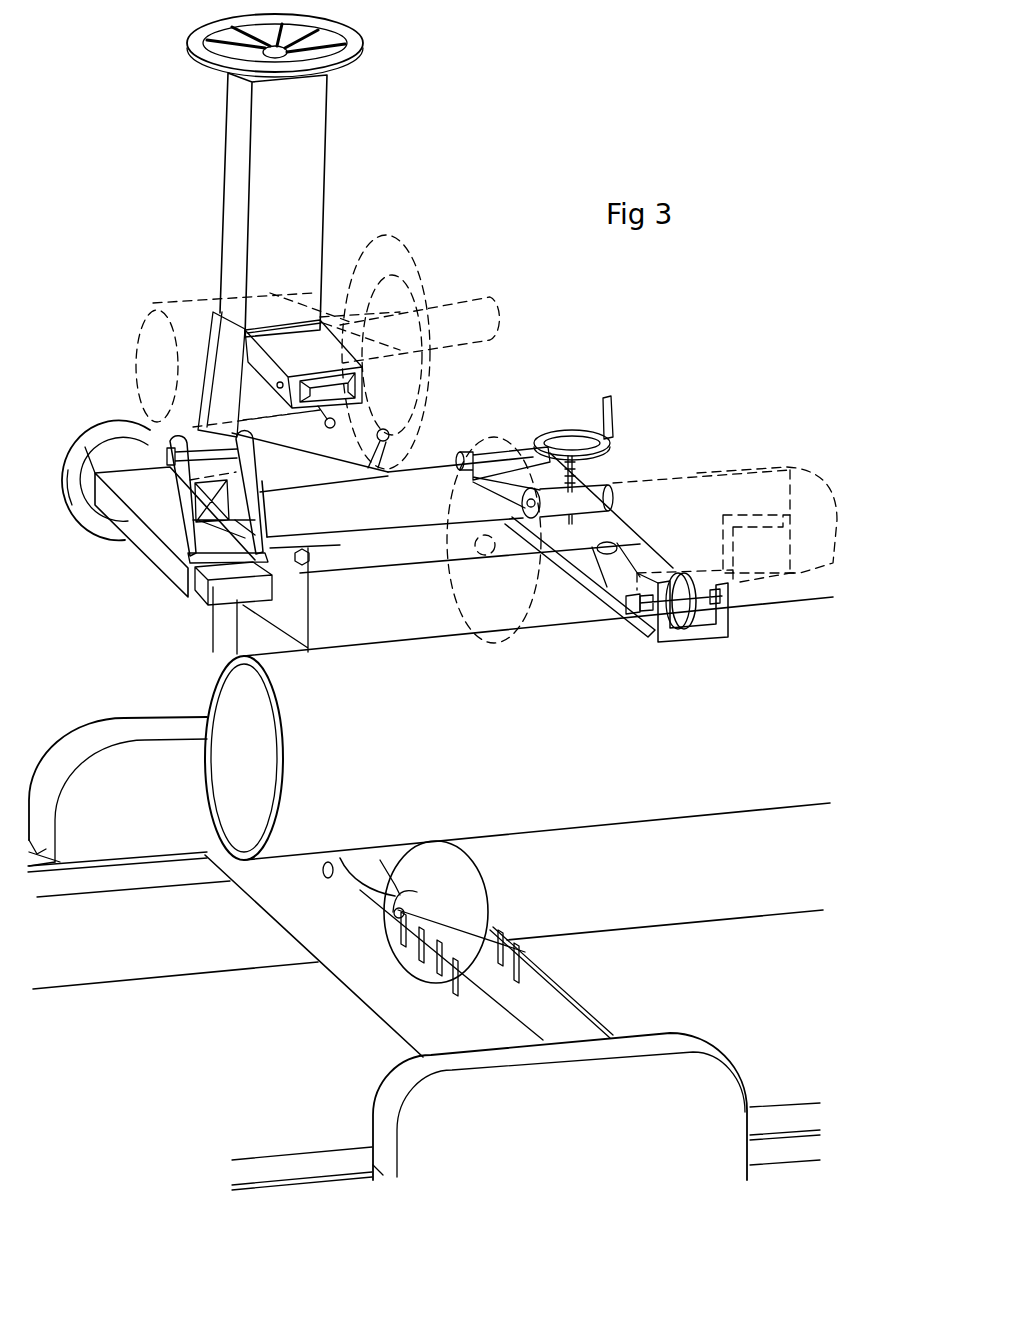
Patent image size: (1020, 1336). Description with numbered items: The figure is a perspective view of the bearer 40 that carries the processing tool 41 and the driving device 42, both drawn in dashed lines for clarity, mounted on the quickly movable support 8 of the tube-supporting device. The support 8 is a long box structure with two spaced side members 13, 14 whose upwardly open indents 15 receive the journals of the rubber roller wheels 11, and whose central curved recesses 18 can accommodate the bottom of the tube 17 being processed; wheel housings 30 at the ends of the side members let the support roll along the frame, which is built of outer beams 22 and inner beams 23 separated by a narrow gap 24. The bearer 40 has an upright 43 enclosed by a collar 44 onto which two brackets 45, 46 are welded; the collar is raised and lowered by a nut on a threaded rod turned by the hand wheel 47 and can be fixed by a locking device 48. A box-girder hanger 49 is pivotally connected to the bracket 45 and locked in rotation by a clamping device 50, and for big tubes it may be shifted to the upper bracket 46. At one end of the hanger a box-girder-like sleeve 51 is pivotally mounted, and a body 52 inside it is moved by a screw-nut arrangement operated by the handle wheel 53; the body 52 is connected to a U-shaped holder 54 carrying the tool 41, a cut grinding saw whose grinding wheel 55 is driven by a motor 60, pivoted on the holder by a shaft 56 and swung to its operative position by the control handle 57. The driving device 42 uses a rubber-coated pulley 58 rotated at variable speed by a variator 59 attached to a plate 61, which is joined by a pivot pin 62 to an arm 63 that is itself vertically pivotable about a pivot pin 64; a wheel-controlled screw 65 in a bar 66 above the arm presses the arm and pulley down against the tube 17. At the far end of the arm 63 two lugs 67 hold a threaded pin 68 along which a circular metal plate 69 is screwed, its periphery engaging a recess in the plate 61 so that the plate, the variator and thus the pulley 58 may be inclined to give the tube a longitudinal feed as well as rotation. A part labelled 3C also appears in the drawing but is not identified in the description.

The hoop 3C is at (680, 1040).
The support 8 is at (518, 920).
The roller element 11 is at (437, 847).
The side member 13 is at (445, 1025).
The side member 14 is at (577, 1006).
The indent 15 is at (420, 965).
The tube 17 is at (350, 663).
The curved recess 18 is at (372, 892).
The outer beam 22 is at (65, 852).
The inner beam 23 is at (95, 897).
The gap 24 is at (140, 870).
The wheel housing 30 is at (125, 725).
The bearer 40 is at (168, 606).
The processing tool 41 is at (341, 272).
The driving device 42 is at (533, 418).
The upright 43 is at (235, 145).
The collar 44 is at (215, 356).
The bracket 45 is at (312, 475).
The bracket 46 is at (263, 330).
The hand wheel 47 is at (340, 30).
The locking device 48 is at (338, 427).
The hanger 49 is at (378, 570).
The clamping device 50 is at (388, 478).
The sleeve 51 is at (137, 546).
The body 52 is at (252, 600).
The handle wheel 53 is at (90, 442).
The U-shaped holder 54 is at (170, 490).
The grinding wheel 55 is at (405, 248).
The shaft 56 is at (192, 447).
The control handle 57 is at (470, 285).
The pulley 58 is at (505, 655).
The variator 59 is at (697, 470).
The motor 60 is at (140, 300).
The plate 61 is at (657, 565).
The pivot pin 62 is at (614, 541).
The arm 63 is at (578, 562).
The pivot pin 64 is at (470, 445).
The wheel-controlled screw 65 is at (590, 462).
The bar 66 is at (614, 493).
The lug 67 is at (643, 630).
The threaded pin 68 is at (707, 580).
The circular metal plate 69 is at (688, 630).